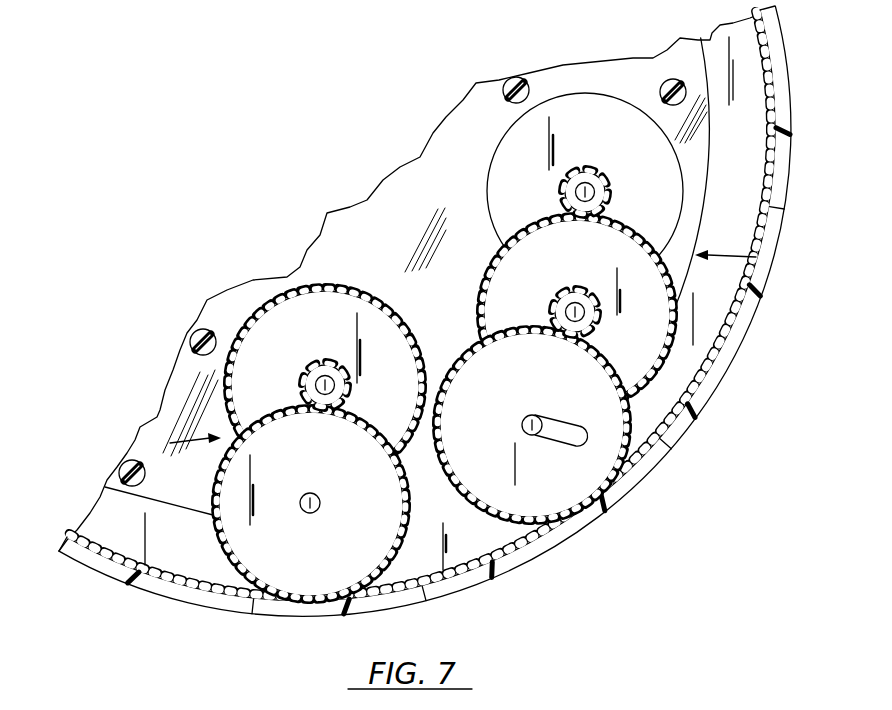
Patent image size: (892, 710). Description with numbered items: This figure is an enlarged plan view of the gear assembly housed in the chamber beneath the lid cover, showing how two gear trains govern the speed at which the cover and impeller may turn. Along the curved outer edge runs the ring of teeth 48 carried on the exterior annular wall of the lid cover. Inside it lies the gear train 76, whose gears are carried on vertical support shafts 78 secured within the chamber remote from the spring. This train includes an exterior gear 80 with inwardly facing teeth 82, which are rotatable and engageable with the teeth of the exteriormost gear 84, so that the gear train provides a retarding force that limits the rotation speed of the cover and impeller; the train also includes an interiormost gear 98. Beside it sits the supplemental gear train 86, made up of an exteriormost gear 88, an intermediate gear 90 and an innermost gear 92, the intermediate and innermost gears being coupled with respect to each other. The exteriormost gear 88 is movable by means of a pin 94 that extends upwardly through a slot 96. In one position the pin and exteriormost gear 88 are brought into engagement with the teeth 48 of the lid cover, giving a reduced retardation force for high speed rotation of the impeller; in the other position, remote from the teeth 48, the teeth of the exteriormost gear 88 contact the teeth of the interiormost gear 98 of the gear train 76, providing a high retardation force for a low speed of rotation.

The teeth 48 is at (88, 547).
The gear train 76 is at (170, 443).
The vertical support shafts 78 is at (300, 501).
The exterior gear 80 is at (318, 368).
The inwardly facing teeth 82 is at (308, 376).
The exteriormost gear 84 is at (290, 545).
The supplemental gear train 86 is at (766, 258).
The exteriormost gear 88 is at (604, 435).
The intermediate gear 90 is at (646, 333).
The innermost gear 92 is at (598, 182).
The pin 94 is at (553, 438).
The slot 96 is at (578, 438).
The interiormost gear 98 is at (310, 317).